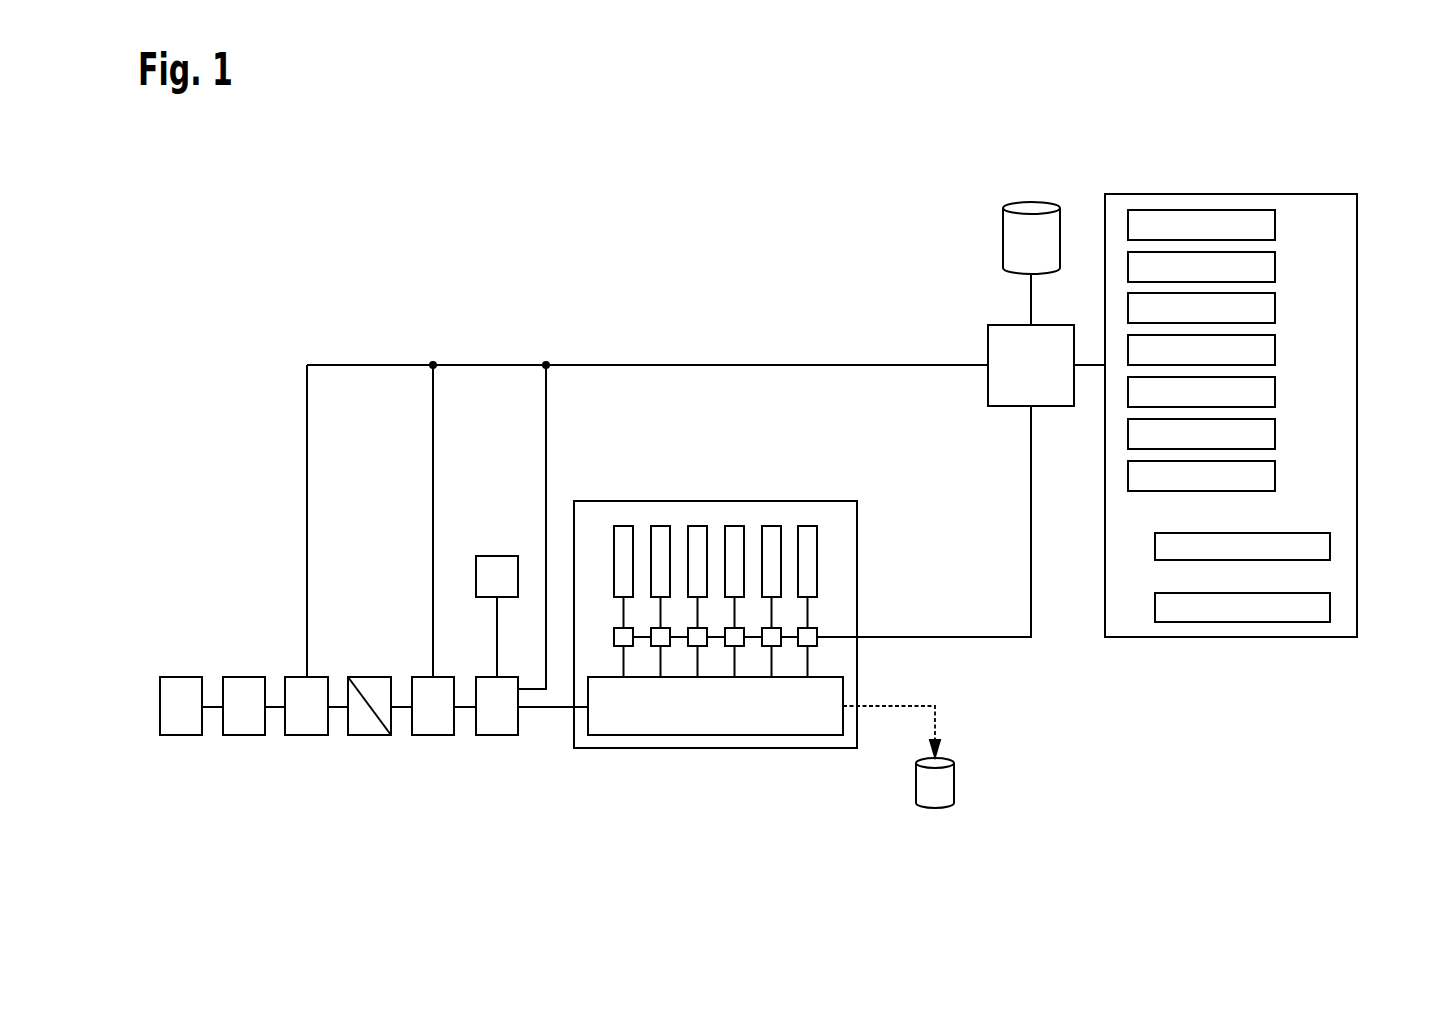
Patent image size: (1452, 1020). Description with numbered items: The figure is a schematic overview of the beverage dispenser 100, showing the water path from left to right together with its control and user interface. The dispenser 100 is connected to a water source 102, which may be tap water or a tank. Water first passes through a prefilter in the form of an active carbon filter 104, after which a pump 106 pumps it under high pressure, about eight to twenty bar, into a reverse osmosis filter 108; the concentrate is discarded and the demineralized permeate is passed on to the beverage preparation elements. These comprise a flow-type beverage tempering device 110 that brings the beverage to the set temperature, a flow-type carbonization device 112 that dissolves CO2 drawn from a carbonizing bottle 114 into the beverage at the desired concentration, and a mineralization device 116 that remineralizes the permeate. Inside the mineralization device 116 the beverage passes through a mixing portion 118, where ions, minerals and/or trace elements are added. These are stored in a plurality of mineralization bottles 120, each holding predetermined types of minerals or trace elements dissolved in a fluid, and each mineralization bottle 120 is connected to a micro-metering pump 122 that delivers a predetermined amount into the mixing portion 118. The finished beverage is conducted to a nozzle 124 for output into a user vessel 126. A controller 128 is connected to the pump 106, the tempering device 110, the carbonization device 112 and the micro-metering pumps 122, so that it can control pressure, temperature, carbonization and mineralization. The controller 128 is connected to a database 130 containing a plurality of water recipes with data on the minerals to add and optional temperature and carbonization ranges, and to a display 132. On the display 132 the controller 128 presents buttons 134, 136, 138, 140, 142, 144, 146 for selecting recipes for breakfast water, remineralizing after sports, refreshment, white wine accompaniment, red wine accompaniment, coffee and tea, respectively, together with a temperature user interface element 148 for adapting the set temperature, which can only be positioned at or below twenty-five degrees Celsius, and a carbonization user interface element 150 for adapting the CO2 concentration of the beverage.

The beverage dispenser 100 is at (388, 230).
The water source 102 is at (182, 736).
The active carbon filter 104 is at (245, 736).
The pump 106 is at (306, 736).
The reverse osmosis filter 108 is at (368, 736).
The beverage tempering device 110 is at (433, 736).
The carbonization device 112 is at (496, 736).
The carbonizing bottle 114 is at (497, 555).
The mineralization device 116 is at (825, 500).
The mixing portion 118 is at (671, 736).
The mineralization bottles 120 is at (825, 555).
The micro-metering pump 122 is at (825, 620).
The nozzle 124 is at (936, 718).
The user vessel 126 is at (955, 780).
The controller 128 is at (987, 343).
The database 130 is at (1002, 240).
The display 132 is at (1230, 638).
The button 134 is at (1276, 226).
The button 136 is at (1276, 267).
The button 138 is at (1276, 309).
The button 140 is at (1276, 350).
The button 142 is at (1276, 392).
The button 144 is at (1276, 434).
The button 146 is at (1276, 476).
The temperature user interface element 148 is at (1331, 545).
The carbonization user interface element 150 is at (1331, 607).